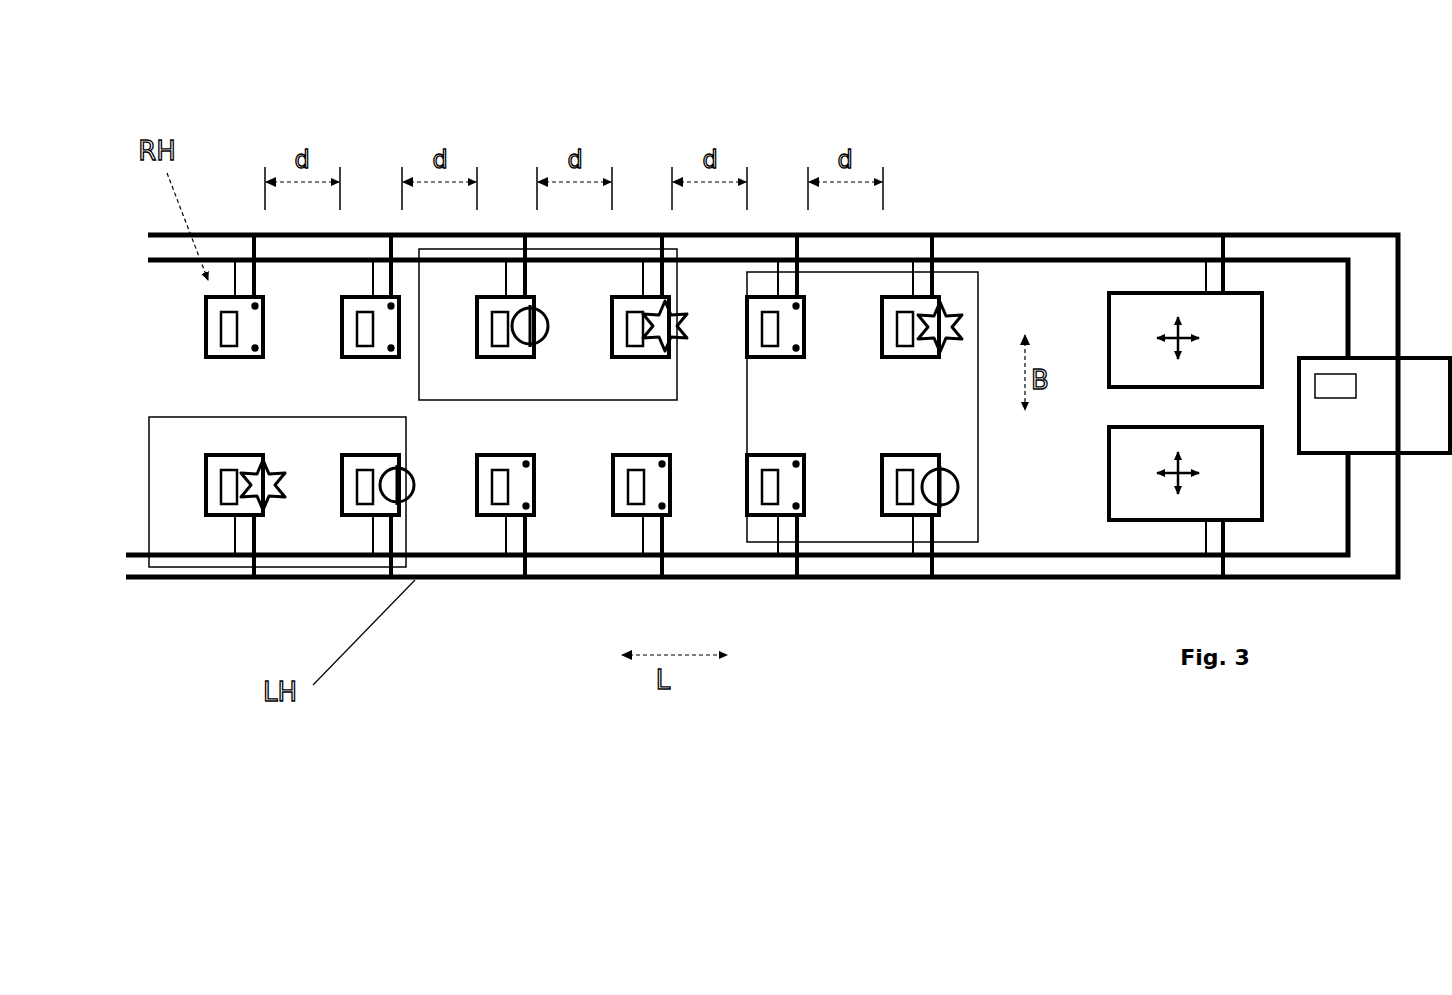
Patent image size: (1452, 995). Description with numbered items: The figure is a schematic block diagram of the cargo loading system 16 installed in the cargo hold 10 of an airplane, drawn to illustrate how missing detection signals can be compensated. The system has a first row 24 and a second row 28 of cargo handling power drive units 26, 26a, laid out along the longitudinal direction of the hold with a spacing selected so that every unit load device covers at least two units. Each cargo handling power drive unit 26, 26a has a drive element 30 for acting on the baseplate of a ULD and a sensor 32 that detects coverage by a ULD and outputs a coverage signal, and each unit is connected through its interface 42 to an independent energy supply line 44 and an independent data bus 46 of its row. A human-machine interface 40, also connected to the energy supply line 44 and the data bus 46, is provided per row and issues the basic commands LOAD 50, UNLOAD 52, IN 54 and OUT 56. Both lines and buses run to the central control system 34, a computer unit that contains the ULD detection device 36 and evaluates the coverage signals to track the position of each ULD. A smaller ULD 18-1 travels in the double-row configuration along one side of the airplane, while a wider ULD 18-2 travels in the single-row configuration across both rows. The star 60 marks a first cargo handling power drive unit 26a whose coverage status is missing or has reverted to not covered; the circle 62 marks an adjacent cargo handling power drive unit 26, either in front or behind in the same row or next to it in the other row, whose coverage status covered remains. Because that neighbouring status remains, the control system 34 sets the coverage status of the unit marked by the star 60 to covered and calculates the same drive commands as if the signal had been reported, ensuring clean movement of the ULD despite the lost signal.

The cargo hold 10 is at (797, 643).
The cargo loading system 16 is at (775, 682).
The unit load device 18-1 is at (980, 367).
The unit load device 18-2 is at (295, 416).
The first row of cargo handling power drive units 24 is at (198, 326).
The cargo handling power drive unit 26 is at (346, 313).
The first cargo handling power drive unit 26a is at (618, 295).
The second row of cargo handling power drive units 28 is at (198, 482).
The drive element 30 is at (501, 504).
The sensor 32 is at (526, 466).
The control system 34 is at (1387, 438).
The ULD detection device 36 is at (1336, 374).
The human-machine interface 40 is at (1108, 390).
The interface 42 is at (245, 290).
The energy supply line 44 is at (162, 231).
The data bus 46 is at (148, 258).
The LOAD command 50 is at (1144, 405).
The UNLOAD command 52 is at (1215, 405).
The IN command 54 is at (1177, 431).
The OUT command 56 is at (1174, 382).
The star 60 is at (685, 314).
The circle 62 is at (547, 330).